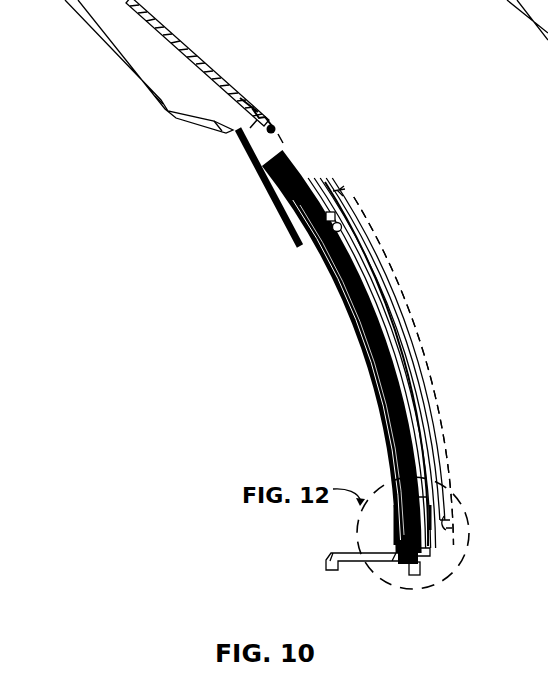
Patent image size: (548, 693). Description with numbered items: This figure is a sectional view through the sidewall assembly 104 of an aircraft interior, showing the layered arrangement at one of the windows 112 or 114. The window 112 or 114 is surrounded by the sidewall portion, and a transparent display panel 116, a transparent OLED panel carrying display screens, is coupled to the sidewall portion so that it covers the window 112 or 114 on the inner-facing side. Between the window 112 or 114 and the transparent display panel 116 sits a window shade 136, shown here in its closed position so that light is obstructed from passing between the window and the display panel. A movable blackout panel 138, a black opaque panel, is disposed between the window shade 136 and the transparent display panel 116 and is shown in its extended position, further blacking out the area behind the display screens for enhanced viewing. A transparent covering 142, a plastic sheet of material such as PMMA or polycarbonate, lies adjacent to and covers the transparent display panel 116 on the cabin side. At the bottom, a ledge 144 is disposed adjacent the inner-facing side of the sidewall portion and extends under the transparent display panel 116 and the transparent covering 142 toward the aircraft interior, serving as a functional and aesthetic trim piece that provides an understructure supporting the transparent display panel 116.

The sidewall assembly 104 is at (122, 134).
The transparent display panel 116 is at (273, 172).
The movable blackout panel 138 is at (330, 212).
The window 112 is at (378, 247).
The window 114 is at (418, 371).
The window shade 136 is at (412, 393).
The transparent covering 142 is at (379, 400).
The ledge 144 is at (345, 552).